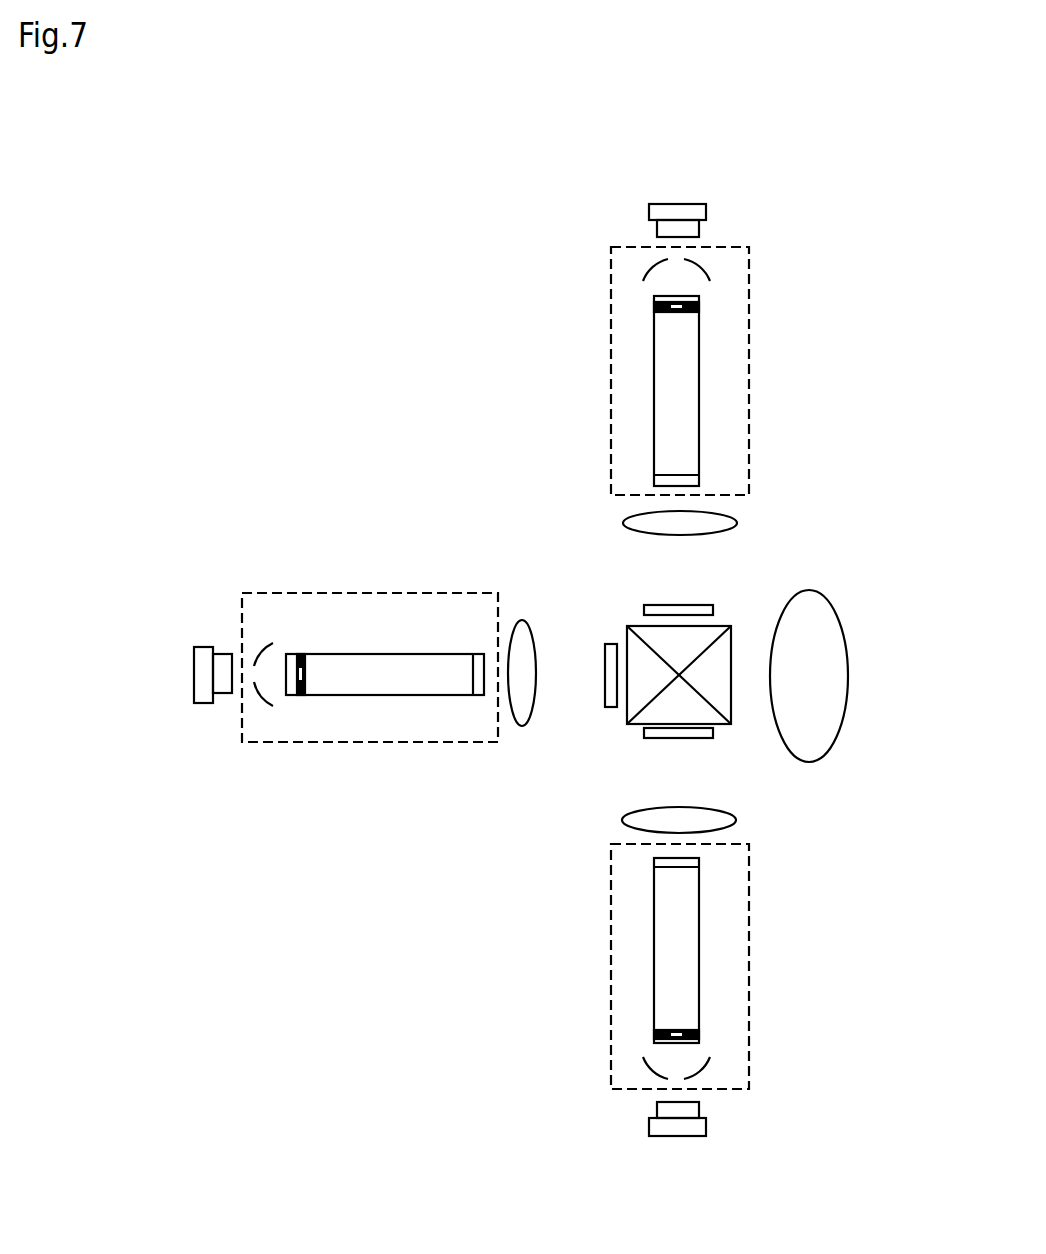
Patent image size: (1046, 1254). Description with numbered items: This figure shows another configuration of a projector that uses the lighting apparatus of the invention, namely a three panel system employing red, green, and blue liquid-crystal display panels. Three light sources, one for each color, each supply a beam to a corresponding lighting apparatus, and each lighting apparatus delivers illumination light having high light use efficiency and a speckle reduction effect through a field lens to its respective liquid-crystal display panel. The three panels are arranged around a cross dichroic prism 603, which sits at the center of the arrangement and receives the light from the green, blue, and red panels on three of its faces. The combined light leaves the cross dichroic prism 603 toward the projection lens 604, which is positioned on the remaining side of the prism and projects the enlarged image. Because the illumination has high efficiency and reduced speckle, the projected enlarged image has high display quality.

The cross dichroic prism 603 is at (630, 628).
The projection lens 604 is at (809, 591).